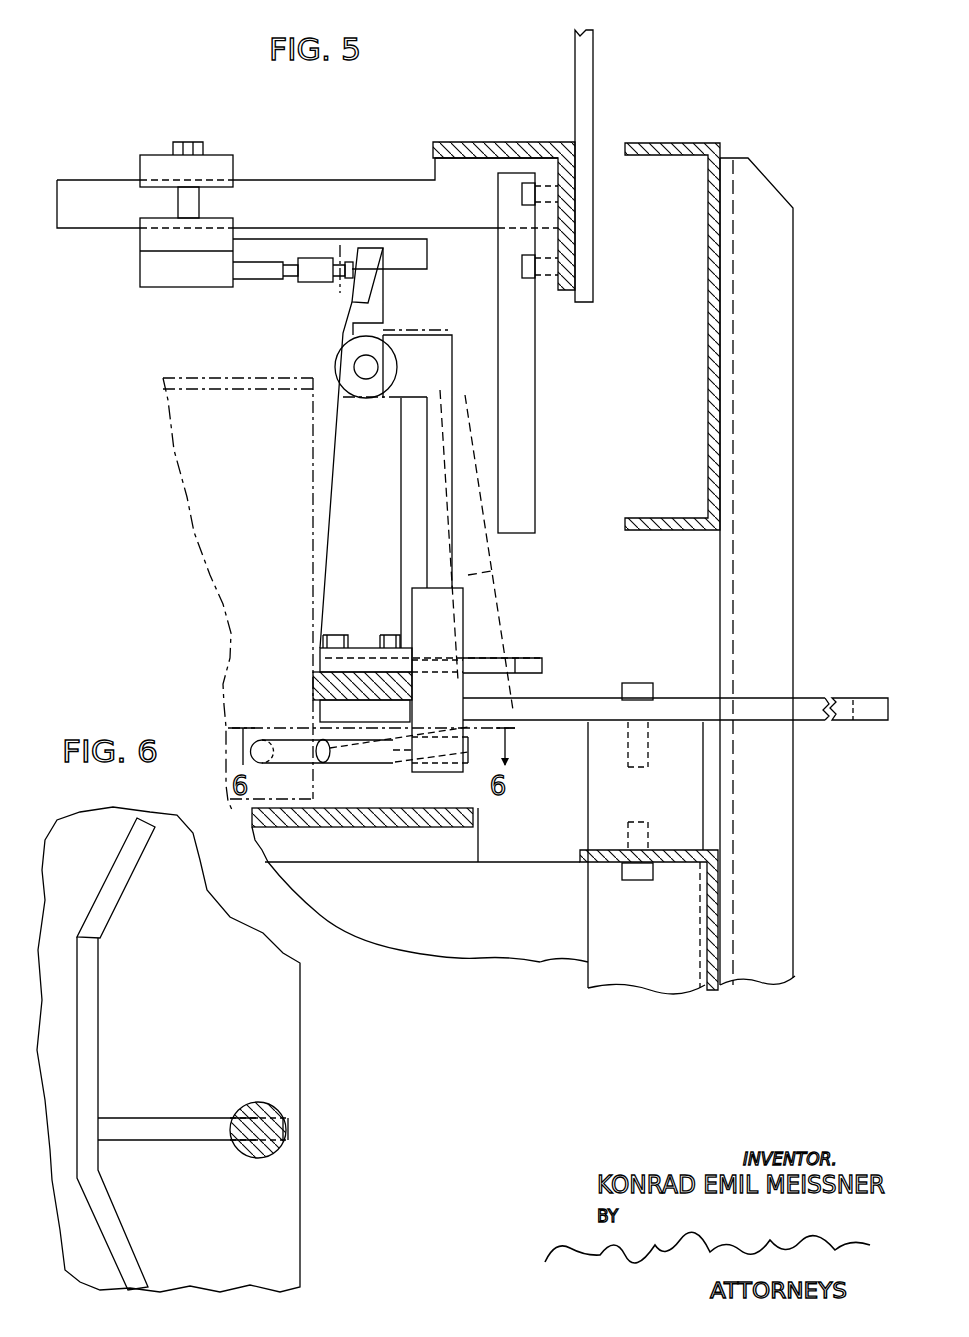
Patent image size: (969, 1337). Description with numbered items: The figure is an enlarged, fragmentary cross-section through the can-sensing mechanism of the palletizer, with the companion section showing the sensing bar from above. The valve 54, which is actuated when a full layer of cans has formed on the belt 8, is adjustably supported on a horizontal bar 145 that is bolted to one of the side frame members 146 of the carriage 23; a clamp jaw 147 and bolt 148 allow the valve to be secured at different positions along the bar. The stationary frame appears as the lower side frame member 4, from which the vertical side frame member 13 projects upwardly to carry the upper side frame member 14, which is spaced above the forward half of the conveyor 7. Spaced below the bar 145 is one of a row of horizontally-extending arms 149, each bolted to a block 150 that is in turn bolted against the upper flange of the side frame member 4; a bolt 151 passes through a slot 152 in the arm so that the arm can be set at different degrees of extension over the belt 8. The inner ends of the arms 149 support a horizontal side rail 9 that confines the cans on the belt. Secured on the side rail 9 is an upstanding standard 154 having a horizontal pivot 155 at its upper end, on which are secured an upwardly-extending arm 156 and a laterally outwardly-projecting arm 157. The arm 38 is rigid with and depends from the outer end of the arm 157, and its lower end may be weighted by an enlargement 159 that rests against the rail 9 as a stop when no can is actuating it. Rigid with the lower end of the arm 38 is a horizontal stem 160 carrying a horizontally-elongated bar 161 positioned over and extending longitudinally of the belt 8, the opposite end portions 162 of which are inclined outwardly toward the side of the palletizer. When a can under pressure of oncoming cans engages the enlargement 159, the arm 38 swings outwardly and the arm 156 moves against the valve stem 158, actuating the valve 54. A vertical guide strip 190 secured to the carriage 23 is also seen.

In FIG. 5, the lower side frame member 4 is at (718, 880).
In FIG. 5, the conveyor 7 is at (480, 812).
In FIG. 5, the belt 8 is at (372, 812).
In FIG. 6, the belt 8 is at (190, 1232).
In FIG. 5, the side rail 9 is at (305, 680).
In FIG. 5, the vertical side frame member 13 is at (760, 424).
In FIG. 5, the upper side frame member 14 is at (720, 352).
In FIG. 5, the carriage 23 is at (575, 150).
In FIG. 5, the arm 38 is at (427, 455).
In FIG. 5, the valve 54 is at (138, 266).
In FIG. 5, the horizontal bar 145 is at (340, 188).
In FIG. 5, the side frame member 146 is at (522, 147).
In FIG. 5, the clamp jaw 147 is at (215, 167).
In FIG. 5, the bolt 148 is at (181, 142).
In FIG. 5, the arm 149 is at (563, 708).
In FIG. 5, the block 150 is at (643, 812).
In FIG. 5, the bolt 151 is at (645, 692).
In FIG. 5, the slot 152 is at (856, 700).
In FIG. 5, the standard 154 is at (343, 543).
In FIG. 5, the horizontal pivot 155 is at (370, 368).
In FIG. 5, the upwardly-extending arm 156 is at (378, 288).
In FIG. 5, the laterally outwardly-projecting arm 157 is at (420, 343).
In FIG. 5, the valve stem 158 is at (338, 248).
In FIG. 5, the enlargement 159 is at (462, 660).
In FIG. 6, the enlargement 159 is at (278, 1110).
In FIG. 5, the stem 160 is at (395, 763).
In FIG. 6, the stem 160 is at (195, 1118).
In FIG. 5, the bar 161 is at (262, 738).
In FIG. 6, the bar 161 is at (100, 1003).
In FIG. 5, the end portion 162 is at (295, 763).
In FIG. 6, the end portion 162 is at (130, 885).
In FIG. 5, the vertical guide strip 190 is at (535, 402).